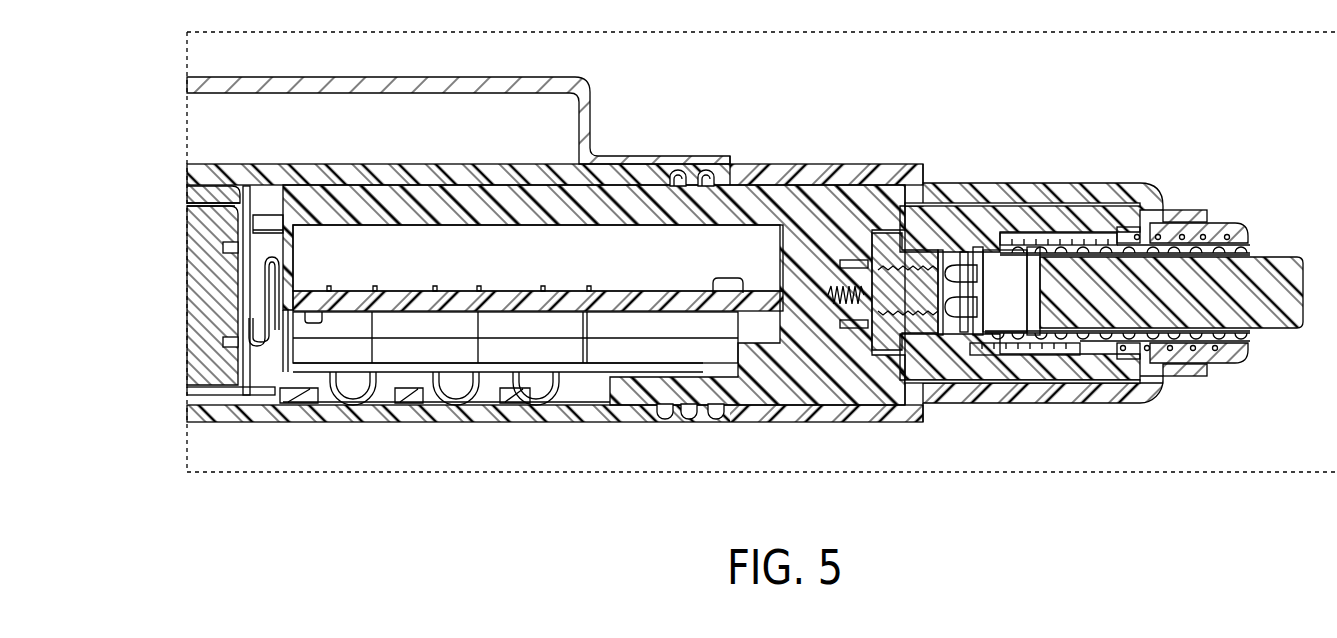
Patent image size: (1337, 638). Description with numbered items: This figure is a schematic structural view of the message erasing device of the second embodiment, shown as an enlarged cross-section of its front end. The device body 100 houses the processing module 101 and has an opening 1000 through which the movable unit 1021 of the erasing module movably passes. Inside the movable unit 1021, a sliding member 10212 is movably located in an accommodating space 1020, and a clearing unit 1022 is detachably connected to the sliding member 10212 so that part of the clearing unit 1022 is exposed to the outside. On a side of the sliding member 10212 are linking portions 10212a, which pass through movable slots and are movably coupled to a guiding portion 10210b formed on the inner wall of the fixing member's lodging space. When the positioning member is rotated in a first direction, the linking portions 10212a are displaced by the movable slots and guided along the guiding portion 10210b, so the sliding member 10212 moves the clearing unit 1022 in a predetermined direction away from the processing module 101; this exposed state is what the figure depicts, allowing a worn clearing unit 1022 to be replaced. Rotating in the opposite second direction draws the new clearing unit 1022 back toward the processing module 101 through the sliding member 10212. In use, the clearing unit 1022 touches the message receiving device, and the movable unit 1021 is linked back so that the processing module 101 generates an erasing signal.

The device body 100 is at (432, 418).
The processing module 101 is at (467, 309).
The linking portion 10212a is at (1058, 243).
The sliding member 10212 is at (1027, 313).
The accommodating space 1020 is at (1180, 255).
The movable unit 1021 is at (1237, 352).
The clearing unit 1022 is at (1280, 287).
The opening 1000 is at (1143, 367).
The guiding portion 10210b is at (1087, 337).